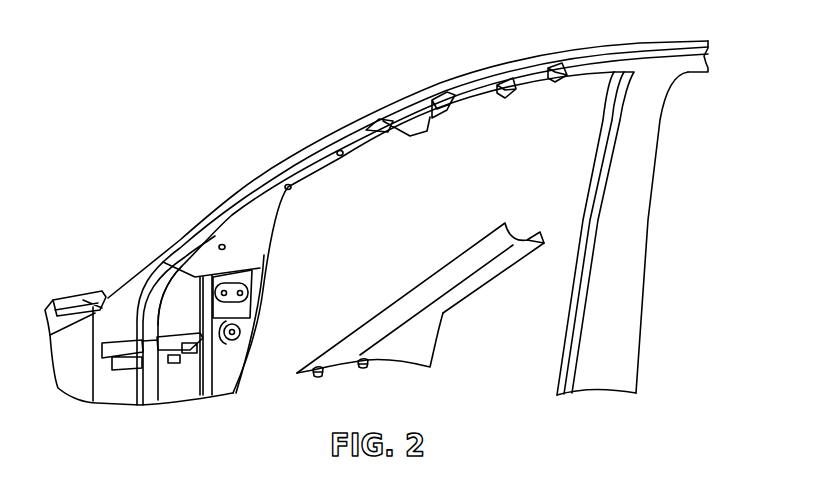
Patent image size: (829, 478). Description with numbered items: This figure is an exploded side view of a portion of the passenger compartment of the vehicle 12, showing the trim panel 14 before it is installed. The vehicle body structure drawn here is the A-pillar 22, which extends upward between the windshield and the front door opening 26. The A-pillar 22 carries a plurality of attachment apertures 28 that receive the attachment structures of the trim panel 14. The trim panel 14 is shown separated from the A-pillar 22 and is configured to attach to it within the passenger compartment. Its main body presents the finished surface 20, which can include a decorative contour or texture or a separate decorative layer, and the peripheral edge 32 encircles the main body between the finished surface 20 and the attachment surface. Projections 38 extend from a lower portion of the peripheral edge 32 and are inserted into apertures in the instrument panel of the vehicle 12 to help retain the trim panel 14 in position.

The vehicle 12 is at (303, 126).
The trim panel 14 is at (474, 304).
The finished surface 20 is at (412, 344).
The A-pillar 22 is at (312, 170).
The front door opening 26 is at (362, 147).
The attachment apertures 28 is at (225, 245).
The peripheral edge 32 is at (354, 327).
The projections 38 is at (362, 369).